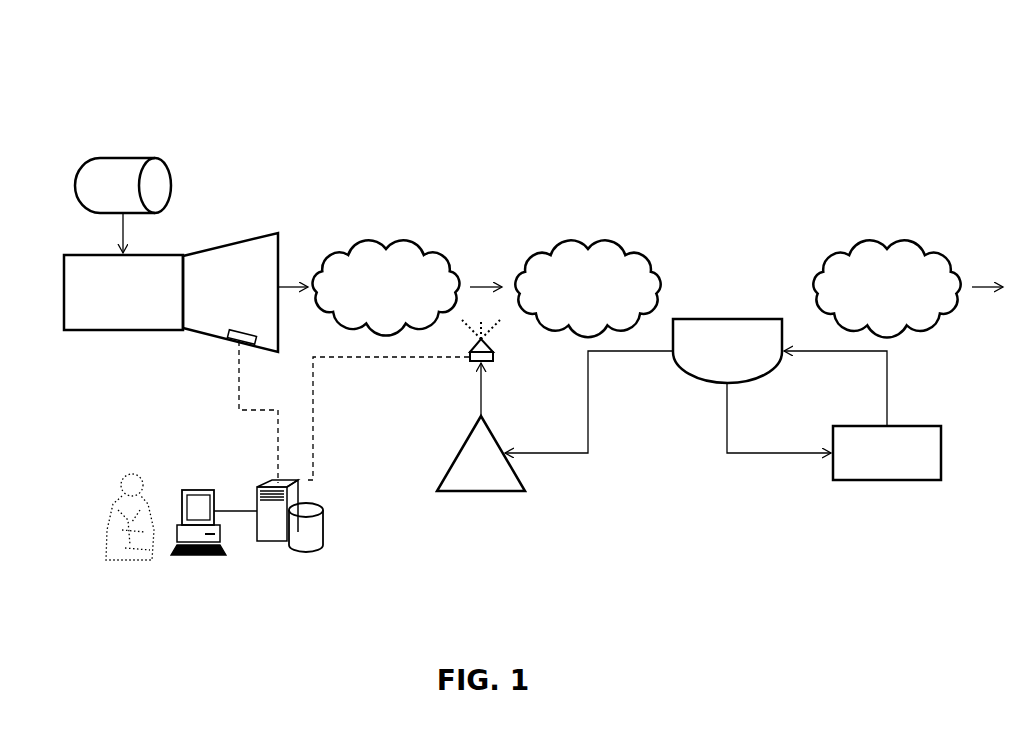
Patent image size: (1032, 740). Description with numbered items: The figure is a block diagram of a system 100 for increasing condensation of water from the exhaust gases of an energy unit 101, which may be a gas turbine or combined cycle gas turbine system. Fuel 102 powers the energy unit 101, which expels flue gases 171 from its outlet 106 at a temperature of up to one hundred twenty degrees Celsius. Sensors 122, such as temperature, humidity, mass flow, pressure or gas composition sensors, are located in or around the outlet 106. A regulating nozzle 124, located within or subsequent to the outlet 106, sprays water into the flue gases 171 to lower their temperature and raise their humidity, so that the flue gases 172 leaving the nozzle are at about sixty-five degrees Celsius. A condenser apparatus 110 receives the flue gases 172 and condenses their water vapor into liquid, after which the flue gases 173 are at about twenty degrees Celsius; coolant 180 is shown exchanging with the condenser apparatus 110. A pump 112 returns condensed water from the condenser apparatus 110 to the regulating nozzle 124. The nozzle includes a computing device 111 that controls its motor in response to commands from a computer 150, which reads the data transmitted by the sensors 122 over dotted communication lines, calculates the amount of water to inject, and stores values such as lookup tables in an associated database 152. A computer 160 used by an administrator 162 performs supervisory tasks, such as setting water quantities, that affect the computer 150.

The system 100 is at (184, 48).
The energy unit 101 is at (123, 292).
The fuel 102 is at (123, 205).
The outlet 106 is at (245, 292).
The condenser apparatus 110 is at (752, 386).
The computing device 111 is at (494, 362).
The pump 112 is at (555, 421).
The sensors 122 is at (228, 343).
The regulating nozzle 124 is at (468, 343).
The computer 150 is at (267, 545).
The database 152 is at (308, 555).
The computer 160 is at (210, 488).
The administrator 162 is at (123, 477).
The flue gases 171 is at (386, 246).
The flue gases 172 is at (611, 246).
The flue gases 173 is at (888, 246).
The coolant 180 is at (862, 415).